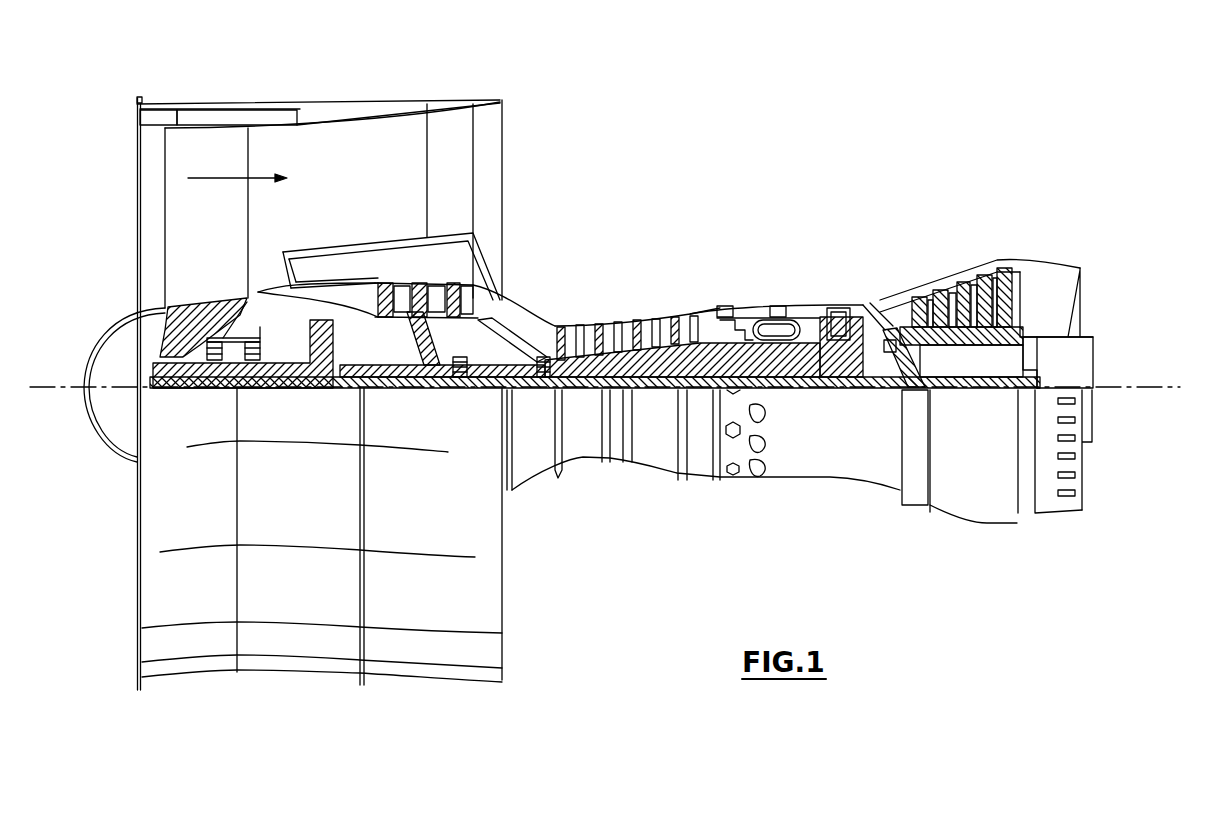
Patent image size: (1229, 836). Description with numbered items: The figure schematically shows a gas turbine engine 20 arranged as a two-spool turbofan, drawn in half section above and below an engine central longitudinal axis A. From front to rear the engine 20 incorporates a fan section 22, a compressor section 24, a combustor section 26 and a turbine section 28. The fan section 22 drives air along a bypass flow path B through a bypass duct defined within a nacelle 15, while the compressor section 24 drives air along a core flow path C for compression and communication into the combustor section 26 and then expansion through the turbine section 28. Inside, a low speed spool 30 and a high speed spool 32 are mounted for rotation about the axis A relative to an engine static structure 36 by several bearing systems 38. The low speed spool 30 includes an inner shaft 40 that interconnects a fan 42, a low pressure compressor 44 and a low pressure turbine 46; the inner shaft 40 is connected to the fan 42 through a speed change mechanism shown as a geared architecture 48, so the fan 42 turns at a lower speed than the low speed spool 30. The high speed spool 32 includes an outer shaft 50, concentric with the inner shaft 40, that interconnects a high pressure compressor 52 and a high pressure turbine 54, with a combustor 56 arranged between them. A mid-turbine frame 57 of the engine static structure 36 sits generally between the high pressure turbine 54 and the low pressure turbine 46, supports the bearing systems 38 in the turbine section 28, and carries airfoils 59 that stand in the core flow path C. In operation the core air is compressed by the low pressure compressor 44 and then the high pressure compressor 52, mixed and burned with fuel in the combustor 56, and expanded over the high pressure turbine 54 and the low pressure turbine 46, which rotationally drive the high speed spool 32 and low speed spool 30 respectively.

The gas turbine engine 20 is at (777, 158).
The fan section 22 is at (250, 98).
The nacelle 15 is at (320, 108).
The compressor section 24 is at (547, 299).
The combustor section 26 is at (773, 287).
The turbine section 28 is at (918, 250).
The low speed spool 30 is at (657, 393).
The high speed spool 32 is at (703, 360).
The engine static structure 36 is at (700, 476).
The bearing systems 38 is at (457, 368).
The inner shaft 40 is at (522, 390).
The fan 42 is at (222, 234).
The low pressure compressor 44 is at (420, 298).
The low pressure turbine 46 is at (968, 275).
The geared architecture 48 is at (325, 374).
The outer shaft 50 is at (787, 380).
The high pressure compressor 52 is at (633, 360).
The high pressure turbine 54 is at (837, 307).
The combustor 56 is at (774, 330).
The mid-turbine frame 57 is at (881, 298).
The airfoils 59 is at (900, 345).
The engine central longitudinal axis A is at (1173, 387).
The bypass flow path B is at (225, 178).
The core flow path C is at (330, 288).